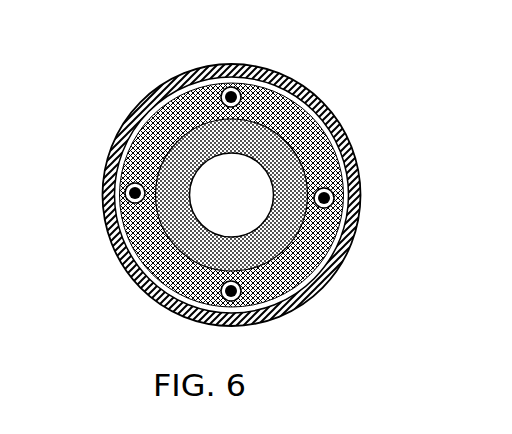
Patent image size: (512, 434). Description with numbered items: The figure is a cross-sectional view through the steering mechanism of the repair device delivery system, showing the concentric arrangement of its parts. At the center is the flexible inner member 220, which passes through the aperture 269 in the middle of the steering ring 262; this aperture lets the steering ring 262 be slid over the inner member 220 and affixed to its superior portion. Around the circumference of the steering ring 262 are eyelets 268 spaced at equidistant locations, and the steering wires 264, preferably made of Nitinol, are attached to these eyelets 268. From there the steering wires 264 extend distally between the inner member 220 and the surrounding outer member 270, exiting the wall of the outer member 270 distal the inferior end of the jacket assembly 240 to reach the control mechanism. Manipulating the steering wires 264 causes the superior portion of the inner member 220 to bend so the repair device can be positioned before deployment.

The inner member 220 is at (320, 250).
The jacket assembly 240 is at (142, 88).
The steering ring 262 is at (300, 84).
The aperture 269 is at (322, 118).
The eyelets 268 is at (312, 170).
The steering wires 264 is at (345, 201).
The outer member 270 is at (226, 78).